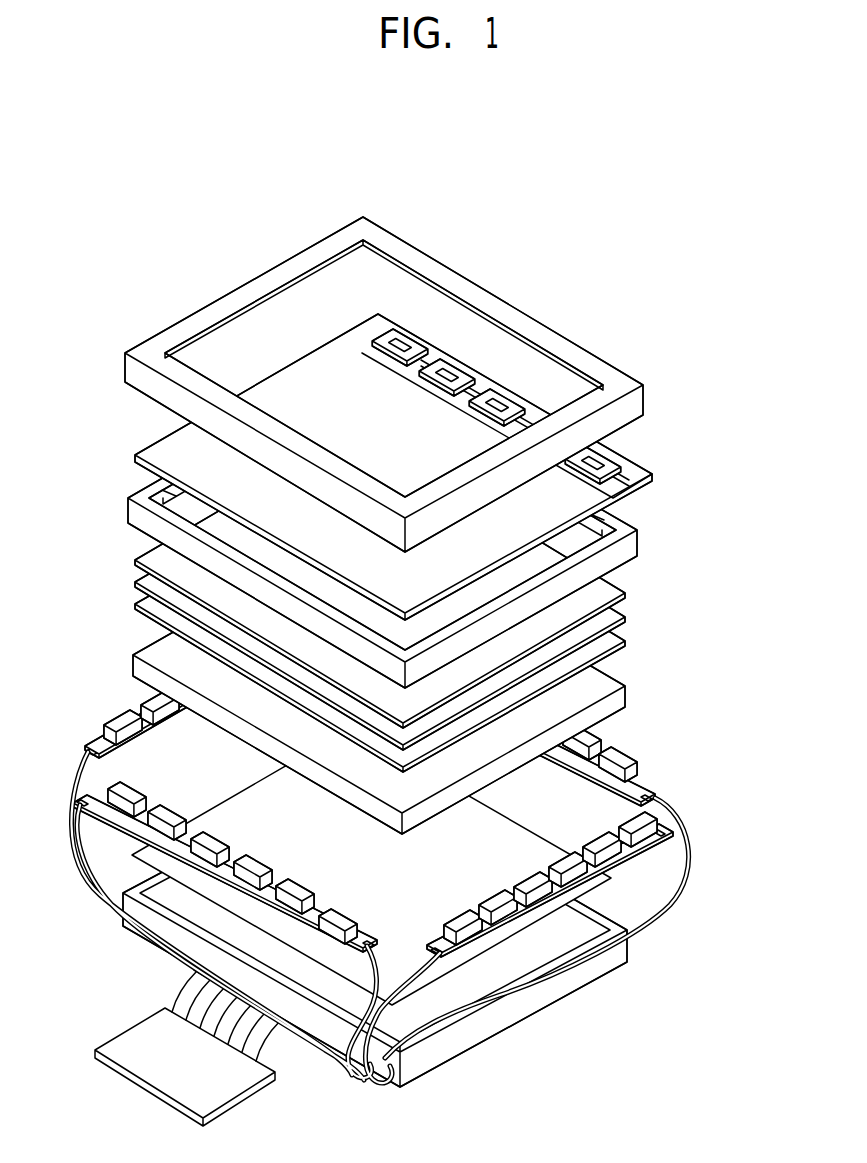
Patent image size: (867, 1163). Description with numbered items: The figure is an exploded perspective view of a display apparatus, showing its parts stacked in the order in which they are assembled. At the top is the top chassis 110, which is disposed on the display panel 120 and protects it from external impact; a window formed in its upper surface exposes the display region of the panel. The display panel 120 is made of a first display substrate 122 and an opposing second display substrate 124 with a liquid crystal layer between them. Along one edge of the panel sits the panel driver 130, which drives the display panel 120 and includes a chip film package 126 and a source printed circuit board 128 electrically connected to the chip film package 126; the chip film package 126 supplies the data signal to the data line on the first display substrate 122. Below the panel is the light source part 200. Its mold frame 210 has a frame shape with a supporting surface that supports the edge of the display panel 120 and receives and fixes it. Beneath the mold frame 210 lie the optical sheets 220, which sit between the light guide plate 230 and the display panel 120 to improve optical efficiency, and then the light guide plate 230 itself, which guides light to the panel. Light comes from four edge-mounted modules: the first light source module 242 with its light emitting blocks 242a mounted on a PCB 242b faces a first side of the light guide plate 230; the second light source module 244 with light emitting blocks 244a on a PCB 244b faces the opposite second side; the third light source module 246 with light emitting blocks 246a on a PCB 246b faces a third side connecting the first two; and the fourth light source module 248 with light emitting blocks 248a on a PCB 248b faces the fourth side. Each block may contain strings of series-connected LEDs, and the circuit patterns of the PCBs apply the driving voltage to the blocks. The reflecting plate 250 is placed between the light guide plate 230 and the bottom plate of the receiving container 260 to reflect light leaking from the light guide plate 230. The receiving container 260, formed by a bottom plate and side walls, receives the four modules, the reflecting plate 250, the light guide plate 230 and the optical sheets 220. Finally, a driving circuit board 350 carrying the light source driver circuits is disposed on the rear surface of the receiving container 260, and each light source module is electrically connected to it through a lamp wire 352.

The top chassis 110 is at (428, 262).
The display panel 120 is at (456, 422).
The first display substrate 122 is at (607, 495).
The second display substrate 124 is at (565, 507).
The chip film package 126 is at (457, 367).
The source printed circuit board 128 is at (533, 410).
The panel driver 130 is at (512, 361).
The light source part 200 is at (420, 742).
The mold frame 210 is at (407, 527).
The optical sheets 220 is at (638, 588).
The light guide plate 230 is at (603, 678).
The first light source module 242 is at (656, 746).
The light emitting blocks 242a is at (625, 755).
The PCB 242b is at (650, 782).
The second light source module 244 is at (201, 902).
The light emitting blocks 244a is at (195, 846).
The PCB 244b is at (187, 860).
The third light source module 246 is at (106, 699).
The light emitting blocks 246a is at (157, 703).
The PCB 246b is at (117, 722).
The fourth light source module 248 is at (550, 953).
The light emitting blocks 248a is at (480, 985).
The PCB 248b is at (565, 930).
The reflecting plate 250 is at (430, 985).
The receiving container 260 is at (628, 945).
The driving circuit board 350 is at (148, 1088).
The lamp wire 352 is at (280, 1060).